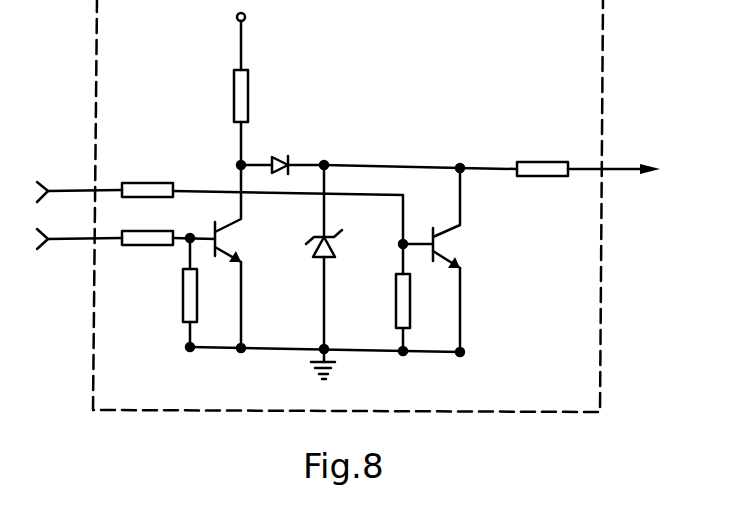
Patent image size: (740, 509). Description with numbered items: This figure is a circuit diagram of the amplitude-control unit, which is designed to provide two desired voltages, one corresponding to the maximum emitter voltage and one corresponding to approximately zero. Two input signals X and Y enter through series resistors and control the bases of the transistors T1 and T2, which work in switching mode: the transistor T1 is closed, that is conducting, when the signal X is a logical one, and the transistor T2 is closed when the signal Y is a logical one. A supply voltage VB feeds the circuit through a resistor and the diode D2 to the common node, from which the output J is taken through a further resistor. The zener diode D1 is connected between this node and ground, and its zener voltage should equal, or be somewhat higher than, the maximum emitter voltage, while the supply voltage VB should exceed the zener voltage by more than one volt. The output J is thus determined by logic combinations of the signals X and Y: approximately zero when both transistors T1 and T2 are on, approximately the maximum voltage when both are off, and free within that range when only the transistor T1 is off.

The transistor T1 is at (448, 260).
The transistor T2 is at (246, 256).
The zener diode D1 is at (345, 257).
The diode D2 is at (282, 146).
The signal X is at (220, 196).
The signal Y is at (126, 288).
The output J is at (560, 155).
The supply voltage VB is at (265, 82).